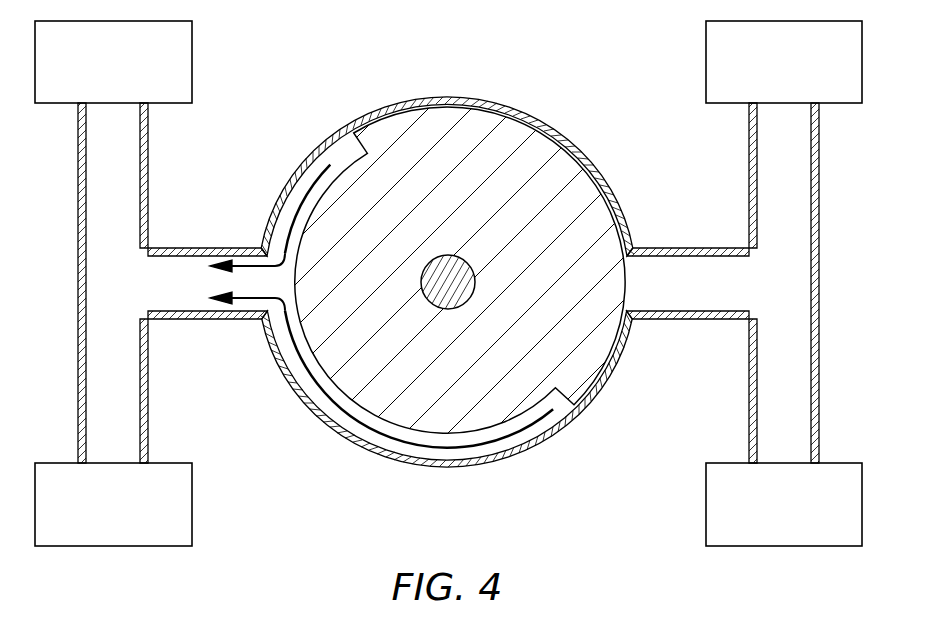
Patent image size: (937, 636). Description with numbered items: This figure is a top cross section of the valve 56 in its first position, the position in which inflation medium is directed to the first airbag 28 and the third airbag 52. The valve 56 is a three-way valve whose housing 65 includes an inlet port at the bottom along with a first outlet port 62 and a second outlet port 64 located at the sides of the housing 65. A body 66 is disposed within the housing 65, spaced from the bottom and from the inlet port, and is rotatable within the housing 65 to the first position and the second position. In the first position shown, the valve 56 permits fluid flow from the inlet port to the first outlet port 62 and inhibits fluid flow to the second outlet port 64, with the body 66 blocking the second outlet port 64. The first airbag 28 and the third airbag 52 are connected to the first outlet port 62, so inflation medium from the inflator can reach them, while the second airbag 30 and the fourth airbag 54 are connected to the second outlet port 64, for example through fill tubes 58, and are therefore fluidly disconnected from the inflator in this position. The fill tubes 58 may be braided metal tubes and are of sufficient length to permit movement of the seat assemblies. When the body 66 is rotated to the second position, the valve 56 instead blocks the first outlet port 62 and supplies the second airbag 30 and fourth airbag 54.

The first airbag 28 is at (192, 37).
The second airbag 30 is at (706, 37).
The third airbag 52 is at (192, 480).
The fourth airbag 54 is at (706, 480).
The valve 56 is at (583, 109).
The fill tubes 58 is at (78, 193).
The first outlet port 62 is at (250, 282).
The second outlet port 64 is at (650, 285).
The housing 65 is at (318, 152).
The body 66 is at (434, 128).